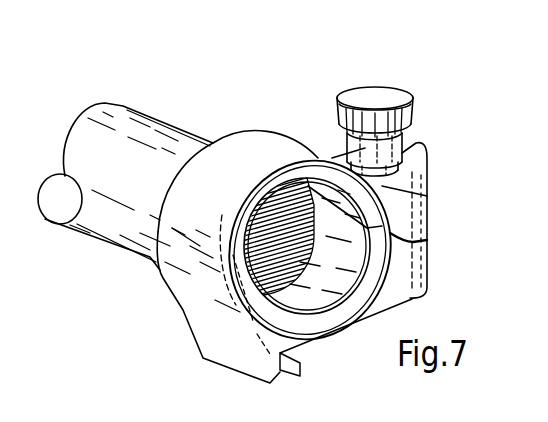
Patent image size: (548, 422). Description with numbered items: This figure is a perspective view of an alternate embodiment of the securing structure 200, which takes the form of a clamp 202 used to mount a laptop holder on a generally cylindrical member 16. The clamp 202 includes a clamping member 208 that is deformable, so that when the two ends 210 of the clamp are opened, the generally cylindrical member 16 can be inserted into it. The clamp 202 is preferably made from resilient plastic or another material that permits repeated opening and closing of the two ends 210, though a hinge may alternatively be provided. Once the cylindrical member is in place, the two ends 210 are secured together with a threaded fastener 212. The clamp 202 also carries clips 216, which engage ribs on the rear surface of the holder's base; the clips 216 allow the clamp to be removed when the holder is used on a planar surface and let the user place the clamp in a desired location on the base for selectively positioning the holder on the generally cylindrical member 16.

The generally cylindrical member 16 is at (160, 128).
The securing structure 200 is at (318, 70).
The clamp 202 is at (247, 147).
The clamping member 208 is at (192, 299).
The two ends 210 is at (418, 220).
The threaded fastener 212 is at (396, 142).
The clips 216 is at (286, 373).